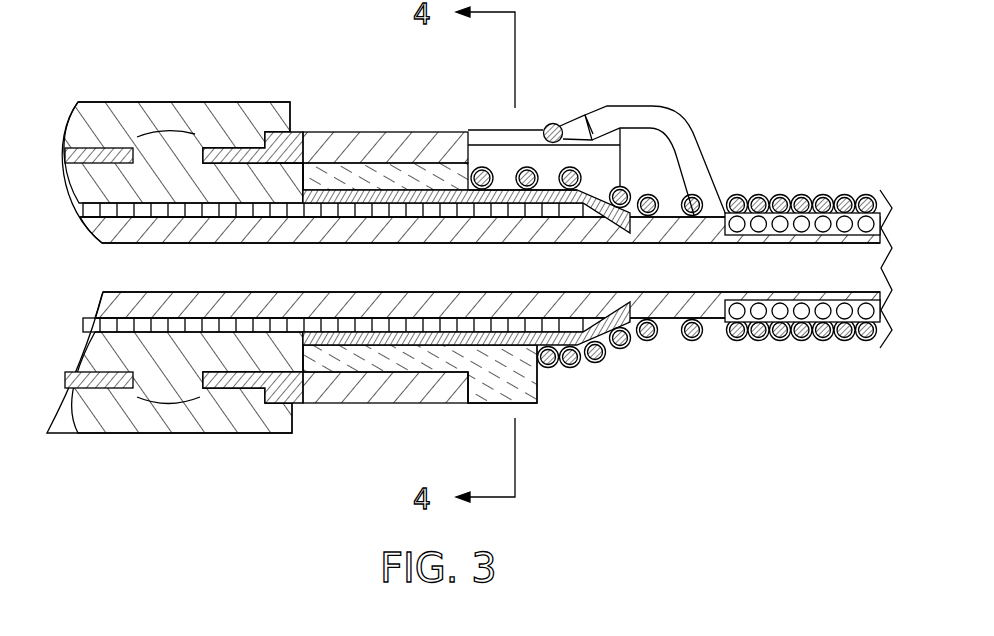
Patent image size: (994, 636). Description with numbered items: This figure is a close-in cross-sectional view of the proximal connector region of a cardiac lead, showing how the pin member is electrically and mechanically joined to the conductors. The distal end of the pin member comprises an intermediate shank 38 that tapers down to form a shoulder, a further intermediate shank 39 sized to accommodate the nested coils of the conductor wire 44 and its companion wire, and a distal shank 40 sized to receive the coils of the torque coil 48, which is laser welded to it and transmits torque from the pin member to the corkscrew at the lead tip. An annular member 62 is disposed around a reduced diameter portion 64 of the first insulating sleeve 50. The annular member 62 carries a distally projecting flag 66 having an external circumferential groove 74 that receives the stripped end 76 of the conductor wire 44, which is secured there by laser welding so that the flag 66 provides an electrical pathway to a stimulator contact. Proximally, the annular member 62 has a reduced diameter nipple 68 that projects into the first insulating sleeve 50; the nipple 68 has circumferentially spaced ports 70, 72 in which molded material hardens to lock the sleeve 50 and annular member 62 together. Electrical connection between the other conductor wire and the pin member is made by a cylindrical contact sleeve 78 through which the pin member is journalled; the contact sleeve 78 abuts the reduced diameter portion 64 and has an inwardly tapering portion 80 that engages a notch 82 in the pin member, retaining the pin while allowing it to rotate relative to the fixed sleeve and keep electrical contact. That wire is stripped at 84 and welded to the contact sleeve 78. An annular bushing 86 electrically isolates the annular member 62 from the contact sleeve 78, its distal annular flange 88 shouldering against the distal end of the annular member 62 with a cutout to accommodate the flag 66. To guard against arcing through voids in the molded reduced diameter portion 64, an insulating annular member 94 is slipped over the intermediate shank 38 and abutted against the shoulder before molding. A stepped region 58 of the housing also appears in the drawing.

The intermediate shank 38 is at (237, 310).
The intermediate shank 39 is at (703, 310).
The distal shank 40 is at (822, 235).
The conductor wire 44 is at (684, 108).
The torque coil 48 is at (832, 322).
The first insulating sleeve 50 is at (108, 102).
The housing step 58 is at (293, 410).
The annular member 62 is at (383, 132).
The reduced diameter portion 64 is at (293, 170).
The flag 66 is at (496, 136).
The nipple 68 is at (228, 157).
The port 70 is at (172, 403).
The port 72 is at (137, 135).
The external circumferential groove 74 is at (548, 124).
The stripped end 76 is at (560, 128).
The contact sleeve 78 is at (548, 368).
The inwardly tapering portion 80 is at (615, 349).
The notch 82 is at (650, 341).
The stripped portion of wire 84 is at (482, 168).
The annular bushing 86 is at (442, 372).
The annular flange 88 is at (473, 390).
The insulating annular member 94 is at (385, 334).